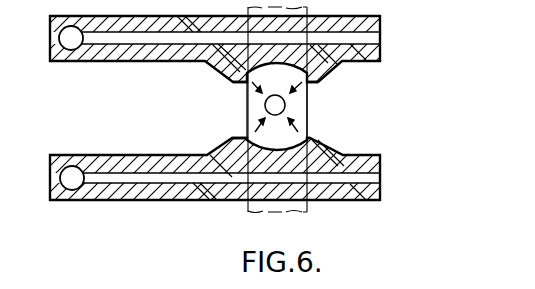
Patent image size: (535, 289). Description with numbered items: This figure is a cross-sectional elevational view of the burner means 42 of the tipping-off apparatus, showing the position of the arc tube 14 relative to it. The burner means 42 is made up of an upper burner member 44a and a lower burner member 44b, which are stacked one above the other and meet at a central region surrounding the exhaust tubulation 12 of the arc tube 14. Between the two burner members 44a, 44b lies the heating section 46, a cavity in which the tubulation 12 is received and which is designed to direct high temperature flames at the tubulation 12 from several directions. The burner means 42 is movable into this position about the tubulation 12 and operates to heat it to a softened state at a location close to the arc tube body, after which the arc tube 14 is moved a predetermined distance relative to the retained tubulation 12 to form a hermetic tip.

The upper burner member 44a is at (380, 25).
The lower burner member 44b is at (380, 160).
The burner means 42 is at (380, 50).
The exhaust tubulation 12 is at (285, 105).
The heating section 46 is at (270, 131).
The arc tube 14 is at (307, 209).